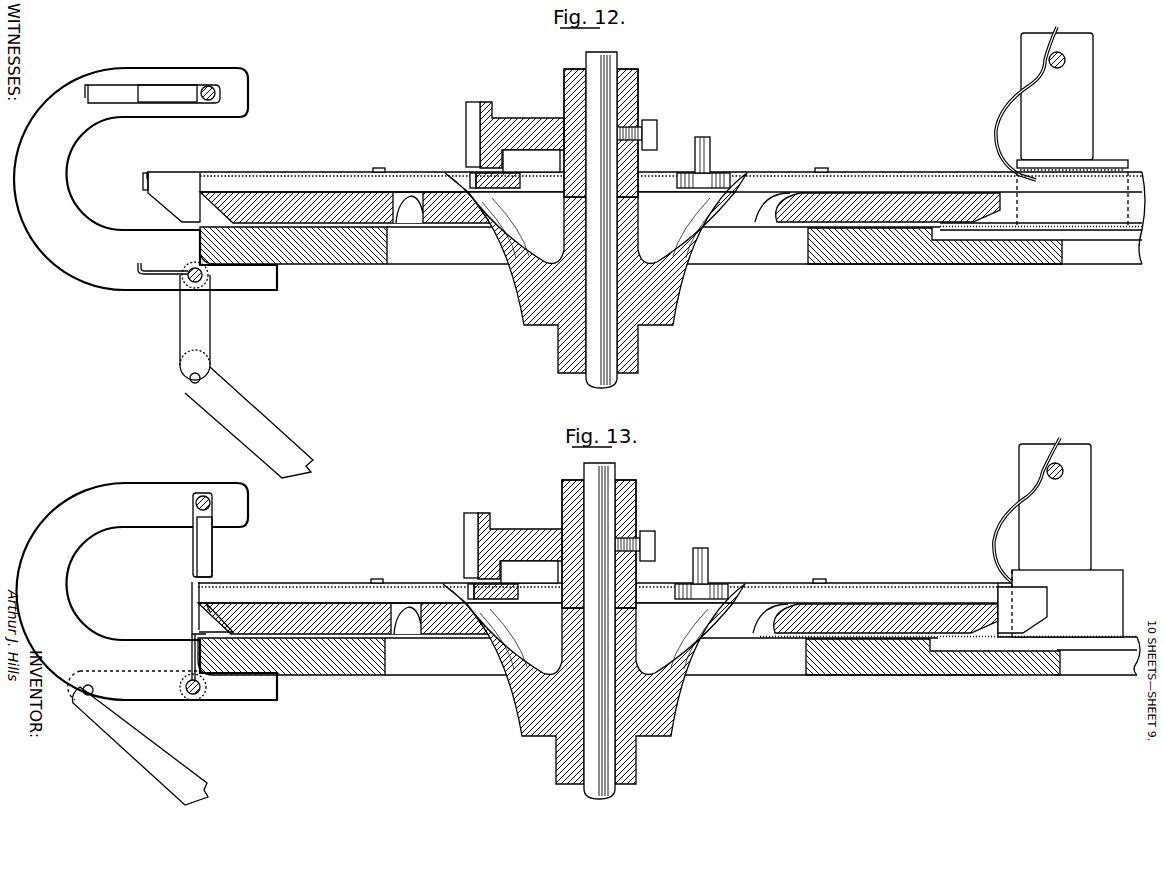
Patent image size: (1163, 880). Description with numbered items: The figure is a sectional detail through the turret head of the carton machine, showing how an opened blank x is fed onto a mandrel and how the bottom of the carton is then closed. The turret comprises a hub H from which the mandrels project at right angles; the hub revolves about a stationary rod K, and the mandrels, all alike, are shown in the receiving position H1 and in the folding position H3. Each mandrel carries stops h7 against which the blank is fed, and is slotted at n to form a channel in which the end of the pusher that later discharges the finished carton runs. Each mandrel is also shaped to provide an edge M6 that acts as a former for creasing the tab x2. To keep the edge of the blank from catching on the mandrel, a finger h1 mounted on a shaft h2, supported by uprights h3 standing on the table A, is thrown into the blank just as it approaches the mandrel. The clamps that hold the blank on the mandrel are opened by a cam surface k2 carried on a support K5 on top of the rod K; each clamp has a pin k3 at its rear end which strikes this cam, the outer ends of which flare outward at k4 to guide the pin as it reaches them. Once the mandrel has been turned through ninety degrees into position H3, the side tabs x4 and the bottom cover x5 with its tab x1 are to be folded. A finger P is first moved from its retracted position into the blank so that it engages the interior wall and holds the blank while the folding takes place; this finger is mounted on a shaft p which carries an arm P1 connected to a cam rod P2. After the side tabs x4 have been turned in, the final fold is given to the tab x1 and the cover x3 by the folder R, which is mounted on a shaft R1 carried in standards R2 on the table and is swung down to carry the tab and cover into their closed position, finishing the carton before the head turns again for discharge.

In FIG. 12, the folder R is at (152, 83).
In FIG. 13, the folder R is at (192, 554).
In FIG. 12, the shaft R1 is at (216, 82).
In FIG. 13, the shaft R1 is at (212, 502).
In FIG. 12, the standards R2 is at (46, 212).
In FIG. 13, the standards R2 is at (147, 591).
In FIG. 12, the fabric strip x is at (268, 166).
In FIG. 13, the fabric strip x is at (598, 569).
In FIG. 12, the tab x1 is at (142, 185).
In FIG. 13, the tab x1 is at (203, 603).
In FIG. 12, the tab x2 is at (428, 212).
In FIG. 13, the tab x2 is at (426, 633).
In FIG. 12, the bottom cover x3 is at (175, 172).
In FIG. 13, the bottom cover x3 is at (191, 600).
In FIG. 12, the side tabs x4 is at (174, 197).
In FIG. 13, the side tabs x4 is at (206, 590).
In FIG. 12, the bottom cover x5 is at (990, 232).
In FIG. 12, the slot n is at (897, 172).
In FIG. 13, the slot n is at (598, 577).
In FIG. 12, the hub H is at (688, 278).
In FIG. 13, the hub H is at (594, 684).
In FIG. 12, the mandrel H1 is at (828, 198).
In FIG. 13, the mandrel H1 is at (886, 589).
In FIG. 12, the mandrel H3 is at (300, 195).
In FIG. 13, the mandrel H3 is at (343, 585).
In FIG. 12, the finger h1 is at (990, 122).
In FIG. 13, the finger h1 is at (1008, 514).
In FIG. 12, the shaft h2 is at (1066, 58).
In FIG. 13, the shaft h2 is at (1066, 442).
In FIG. 12, the uprights h3 is at (1092, 118).
In FIG. 13, the uprights h3 is at (1065, 507).
In FIG. 12, the stops h7 is at (378, 167).
In FIG. 13, the stops h7 is at (598, 561).
In FIG. 12, the cam surface k2 is at (487, 100).
In FIG. 13, the cam surface k2 is at (603, 551).
In FIG. 12, the pin k3 is at (712, 127).
In FIG. 13, the pin k3 is at (613, 554).
In FIG. 12, the flared outer ends k4 is at (466, 110).
In FIG. 13, the flared outer ends k4 is at (488, 554).
In FIG. 12, the rod K is at (617, 385).
In FIG. 13, the rod K is at (619, 635).
In FIG. 12, the support K5 is at (640, 78).
In FIG. 13, the support K5 is at (616, 544).
In FIG. 12, the edge M6 is at (402, 220).
In FIG. 13, the edge M6 is at (493, 639).
In FIG. 12, the table A is at (976, 264).
In FIG. 13, the table A is at (722, 667).
In FIG. 12, the finger P is at (150, 268).
In FIG. 13, the finger P is at (191, 656).
In FIG. 12, the shaft p is at (205, 283).
In FIG. 13, the shaft p is at (197, 698).
In FIG. 12, the arm P1 is at (182, 328).
In FIG. 13, the arm P1 is at (128, 748).
In FIG. 12, the cam rod P2 is at (272, 433).